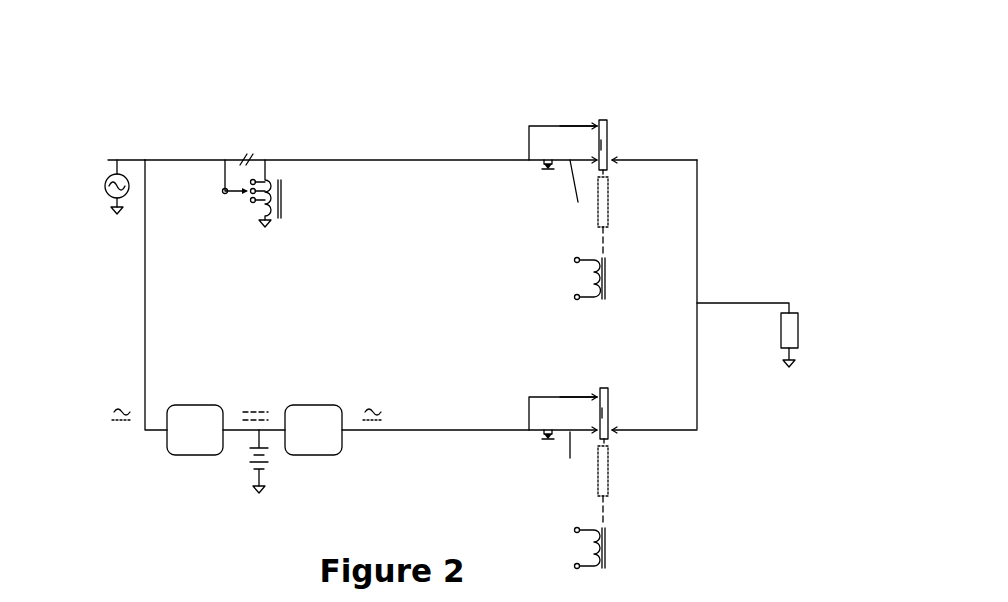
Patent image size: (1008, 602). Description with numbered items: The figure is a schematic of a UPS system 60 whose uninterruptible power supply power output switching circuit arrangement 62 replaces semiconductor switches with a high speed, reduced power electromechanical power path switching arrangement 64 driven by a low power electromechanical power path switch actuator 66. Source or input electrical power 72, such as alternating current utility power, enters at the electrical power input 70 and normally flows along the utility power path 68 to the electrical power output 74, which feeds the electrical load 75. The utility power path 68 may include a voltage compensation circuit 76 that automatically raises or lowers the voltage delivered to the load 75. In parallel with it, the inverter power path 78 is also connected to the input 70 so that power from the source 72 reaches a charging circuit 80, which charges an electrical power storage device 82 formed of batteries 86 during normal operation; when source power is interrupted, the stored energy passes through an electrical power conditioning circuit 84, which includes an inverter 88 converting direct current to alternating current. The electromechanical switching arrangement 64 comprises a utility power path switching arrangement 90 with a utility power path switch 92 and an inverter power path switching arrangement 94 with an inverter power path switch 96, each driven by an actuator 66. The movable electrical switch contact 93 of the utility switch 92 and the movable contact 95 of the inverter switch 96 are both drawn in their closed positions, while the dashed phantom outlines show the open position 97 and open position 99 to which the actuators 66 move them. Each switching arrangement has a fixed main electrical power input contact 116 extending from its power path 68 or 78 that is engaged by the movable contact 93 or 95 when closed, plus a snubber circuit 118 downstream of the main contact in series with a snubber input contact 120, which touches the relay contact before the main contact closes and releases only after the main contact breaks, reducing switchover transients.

The UPS system 60 is at (717, 428).
The uninterruptible power supply power output switching circuit arrangement 62 is at (700, 157).
The electromechanical power path switching arrangement 64 is at (632, 112).
The electromechanical power path switch actuator 66 is at (556, 271).
The utility power path 68 is at (373, 160).
The electrical power input 70 is at (133, 160).
The source or input electrical power 72 is at (102, 173).
The electrical power output 74 is at (747, 303).
The electrical load 75 is at (807, 350).
The voltage compensation circuit 76 is at (295, 208).
The inverter power path 78 is at (140, 307).
The charging circuit 80 is at (190, 430).
The electrical power storage device 82 is at (237, 475).
The electrical power conditioning circuit 84 is at (334, 430).
The battery 86 is at (267, 470).
The inverter 88 is at (313, 405).
The utility power path switching arrangement 90 is at (594, 110).
The utility power path switch 92 is at (607, 115).
The movable electrical switch contact 93 is at (607, 145).
The inverter power path switching arrangement 94 is at (613, 380).
The movable electrical switch contact 95 is at (609, 415).
The inverter power path switch 96 is at (600, 385).
The open position 97 is at (610, 208).
The open position 99 is at (613, 467).
The fixed main electrical power input contact 116 is at (583, 125).
The snubber circuit 118 is at (545, 168).
The snubber input contact 120 is at (571, 329).